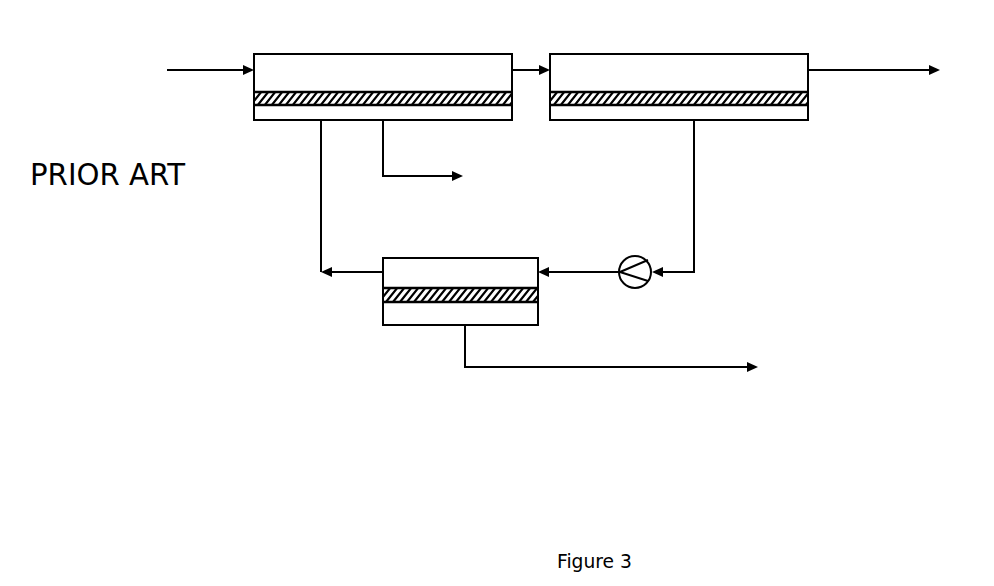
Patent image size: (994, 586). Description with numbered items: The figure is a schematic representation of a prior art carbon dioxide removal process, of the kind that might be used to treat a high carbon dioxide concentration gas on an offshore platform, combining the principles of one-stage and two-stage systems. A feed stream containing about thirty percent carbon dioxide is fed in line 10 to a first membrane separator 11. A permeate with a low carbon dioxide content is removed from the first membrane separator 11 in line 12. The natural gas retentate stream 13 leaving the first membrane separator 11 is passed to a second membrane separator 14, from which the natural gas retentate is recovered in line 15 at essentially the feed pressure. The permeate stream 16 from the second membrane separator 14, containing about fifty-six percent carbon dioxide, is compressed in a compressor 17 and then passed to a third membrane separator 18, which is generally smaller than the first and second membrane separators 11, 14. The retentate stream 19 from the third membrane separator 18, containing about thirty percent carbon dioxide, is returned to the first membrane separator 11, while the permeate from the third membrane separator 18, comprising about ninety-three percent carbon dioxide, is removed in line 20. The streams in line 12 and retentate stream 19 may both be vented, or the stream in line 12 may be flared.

The line 10 is at (235, 63).
The first membrane separator 11 is at (398, 52).
The line 12 is at (440, 155).
The natural gas retentate stream 13 is at (533, 62).
The second membrane separator 14 is at (694, 53).
The line 15 is at (890, 60).
The permeate stream 16 is at (694, 200).
The compressor 17 is at (630, 253).
The third membrane separator 18 is at (458, 245).
The retentate stream 19 is at (321, 178).
The line 20 is at (673, 365).